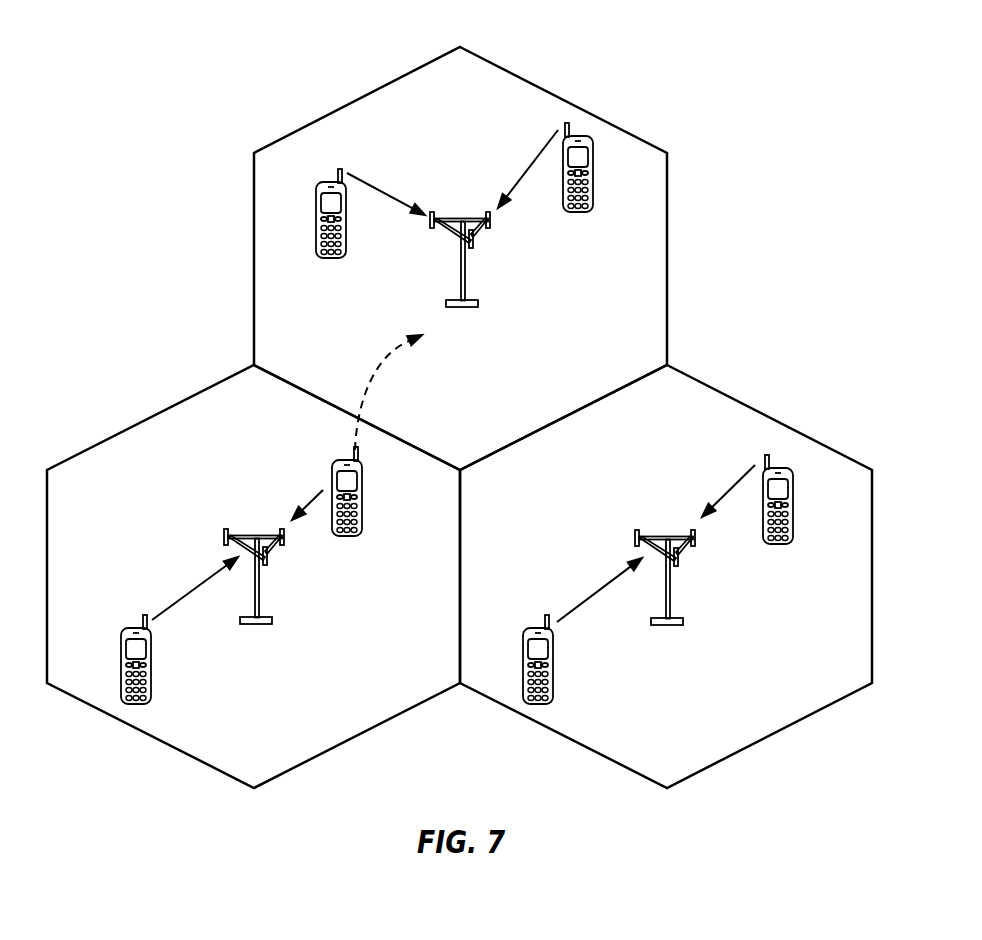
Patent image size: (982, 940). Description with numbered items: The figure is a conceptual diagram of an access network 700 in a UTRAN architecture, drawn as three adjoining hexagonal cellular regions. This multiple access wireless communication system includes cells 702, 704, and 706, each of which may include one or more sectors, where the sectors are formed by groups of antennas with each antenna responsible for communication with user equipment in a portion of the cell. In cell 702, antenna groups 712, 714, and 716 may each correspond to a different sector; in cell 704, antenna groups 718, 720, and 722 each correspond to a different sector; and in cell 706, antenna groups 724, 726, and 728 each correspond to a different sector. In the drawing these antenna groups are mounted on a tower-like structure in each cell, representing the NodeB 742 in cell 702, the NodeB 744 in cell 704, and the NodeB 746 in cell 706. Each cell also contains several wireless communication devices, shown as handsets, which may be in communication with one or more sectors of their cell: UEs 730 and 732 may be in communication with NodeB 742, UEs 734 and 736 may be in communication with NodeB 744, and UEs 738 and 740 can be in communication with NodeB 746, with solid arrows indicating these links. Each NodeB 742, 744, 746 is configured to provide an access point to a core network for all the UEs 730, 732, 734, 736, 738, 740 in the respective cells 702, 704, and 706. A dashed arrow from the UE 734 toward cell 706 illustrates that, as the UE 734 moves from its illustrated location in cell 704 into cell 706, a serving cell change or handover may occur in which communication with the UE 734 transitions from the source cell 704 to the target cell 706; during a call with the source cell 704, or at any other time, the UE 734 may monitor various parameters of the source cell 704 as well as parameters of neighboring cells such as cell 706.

The access network 700 is at (459, 404).
The cell 702 is at (767, 415).
The cell 704 is at (123, 428).
The cell 706 is at (543, 88).
The antenna group 712 is at (605, 523).
The antenna group 714 is at (709, 571).
The antenna group 716 is at (726, 550).
The antenna group 718 is at (295, 572).
The antenna group 720 is at (312, 551).
The antenna group 722 is at (197, 524).
The antenna group 724 is at (400, 236).
The antenna group 726 is at (504, 254).
The antenna group 728 is at (519, 232).
The UE 730 is at (792, 492).
The UE 732 is at (532, 627).
The UE 734 is at (362, 492).
The UE 736 is at (122, 653).
The UE 738 is at (337, 260).
The UE 740 is at (580, 213).
The NodeB 742 is at (667, 556).
The NodeB 744 is at (255, 555).
The NodeB 746 is at (458, 238).